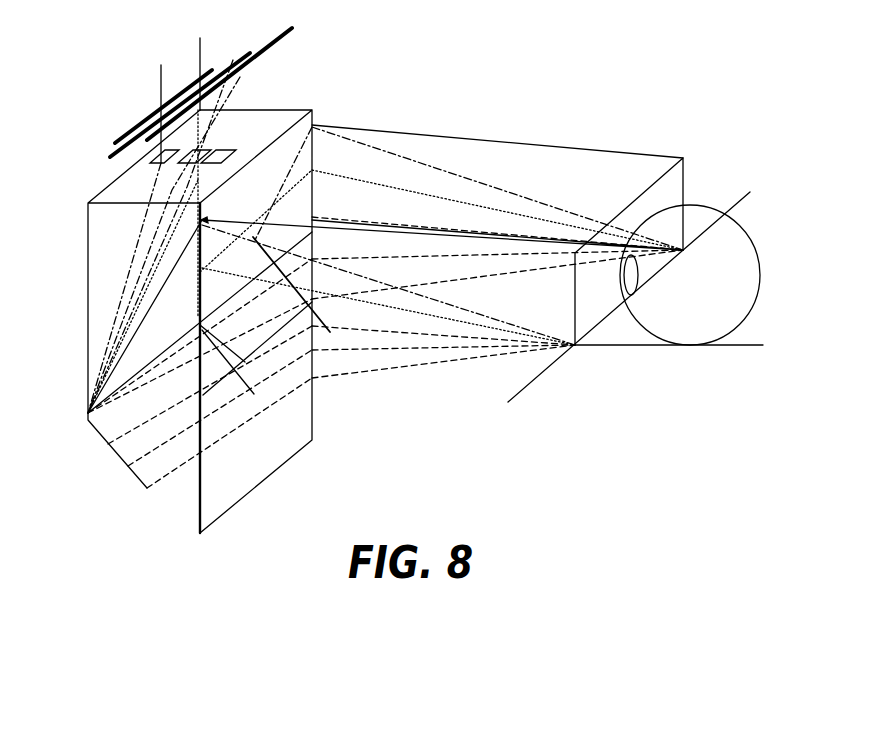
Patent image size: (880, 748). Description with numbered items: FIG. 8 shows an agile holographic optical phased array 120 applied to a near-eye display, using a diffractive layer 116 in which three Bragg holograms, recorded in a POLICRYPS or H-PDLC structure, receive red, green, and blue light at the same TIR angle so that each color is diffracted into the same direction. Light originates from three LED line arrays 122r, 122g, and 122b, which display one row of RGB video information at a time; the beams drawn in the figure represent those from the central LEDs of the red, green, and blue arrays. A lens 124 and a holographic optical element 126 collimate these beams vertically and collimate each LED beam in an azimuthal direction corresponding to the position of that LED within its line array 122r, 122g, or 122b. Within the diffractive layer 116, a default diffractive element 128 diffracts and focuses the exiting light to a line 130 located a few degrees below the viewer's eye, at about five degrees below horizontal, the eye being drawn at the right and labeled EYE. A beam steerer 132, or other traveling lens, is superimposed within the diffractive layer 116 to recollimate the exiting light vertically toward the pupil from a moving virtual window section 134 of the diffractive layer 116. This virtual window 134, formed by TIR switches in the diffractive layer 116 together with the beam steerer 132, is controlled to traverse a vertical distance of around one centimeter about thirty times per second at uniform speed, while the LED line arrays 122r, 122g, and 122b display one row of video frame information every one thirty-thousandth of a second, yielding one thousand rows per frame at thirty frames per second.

The diffractive layer 116 is at (300, 122).
The agile holographic optical phased array 120 is at (88, 219).
The blue LED line array 122b is at (278, 40).
The green LED line array 122g is at (200, 90).
The red LED line array 122r is at (127, 138).
The lens 124 is at (127, 253).
The holographic optical element 126 is at (110, 445).
The default diffractive element 128 is at (245, 362).
The line 130 is at (533, 382).
The beam steerer 132 is at (330, 332).
The virtual window section 134 is at (312, 143).
The viewer's eye EYE is at (705, 207).